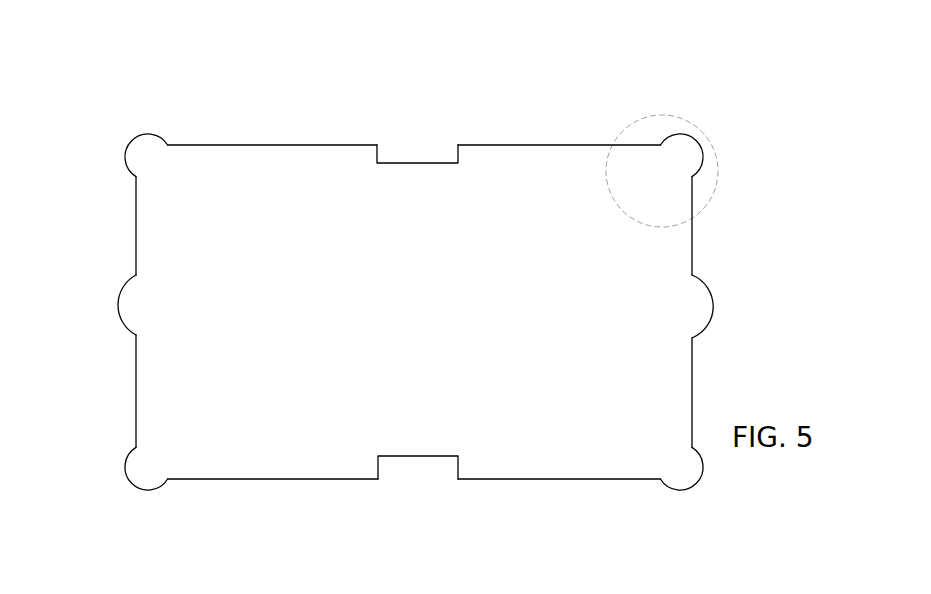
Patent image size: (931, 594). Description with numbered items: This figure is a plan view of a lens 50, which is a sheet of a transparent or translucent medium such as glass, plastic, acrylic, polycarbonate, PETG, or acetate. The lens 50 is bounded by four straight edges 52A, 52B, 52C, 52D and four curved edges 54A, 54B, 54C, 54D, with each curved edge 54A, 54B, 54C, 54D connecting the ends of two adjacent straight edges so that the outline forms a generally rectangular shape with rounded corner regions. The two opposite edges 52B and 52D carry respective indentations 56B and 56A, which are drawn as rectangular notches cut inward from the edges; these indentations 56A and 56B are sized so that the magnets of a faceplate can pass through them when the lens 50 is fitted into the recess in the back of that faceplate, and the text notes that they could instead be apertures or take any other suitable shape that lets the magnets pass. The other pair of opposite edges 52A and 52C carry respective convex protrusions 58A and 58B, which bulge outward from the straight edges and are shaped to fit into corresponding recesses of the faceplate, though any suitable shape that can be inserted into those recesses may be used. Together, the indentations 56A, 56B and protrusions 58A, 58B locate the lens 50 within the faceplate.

The lens 50 is at (249, 118).
The straight edge 52A is at (135, 380).
The straight edge 52B is at (520, 147).
The straight edge 52C is at (693, 250).
The straight edge 52D is at (262, 481).
The curved edge 54A is at (127, 150).
The curved edge 54B is at (693, 140).
The curved edge 54C is at (687, 490).
The curved edge 54D is at (140, 490).
The indentation 56A is at (424, 464).
The indentation 56B is at (428, 153).
The convex protrusion 58A is at (131, 302).
The convex protrusion 58B is at (697, 311).